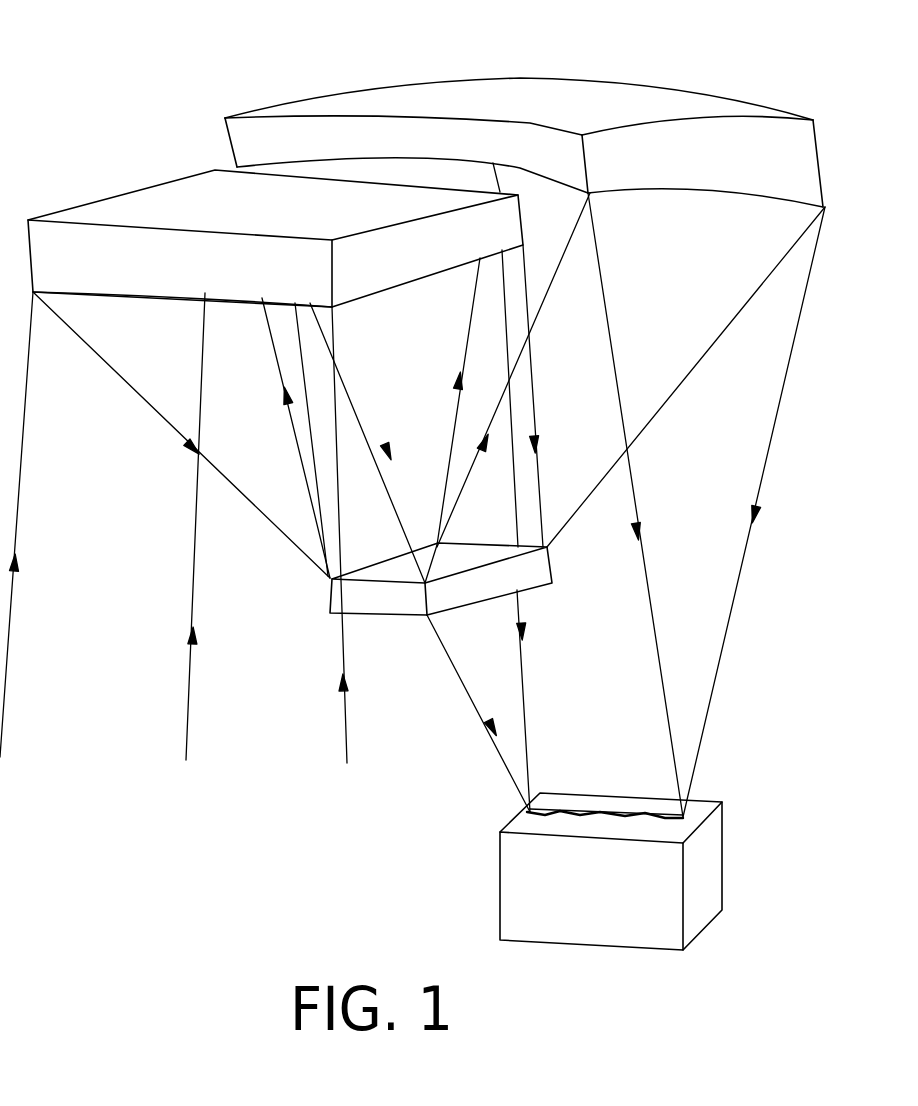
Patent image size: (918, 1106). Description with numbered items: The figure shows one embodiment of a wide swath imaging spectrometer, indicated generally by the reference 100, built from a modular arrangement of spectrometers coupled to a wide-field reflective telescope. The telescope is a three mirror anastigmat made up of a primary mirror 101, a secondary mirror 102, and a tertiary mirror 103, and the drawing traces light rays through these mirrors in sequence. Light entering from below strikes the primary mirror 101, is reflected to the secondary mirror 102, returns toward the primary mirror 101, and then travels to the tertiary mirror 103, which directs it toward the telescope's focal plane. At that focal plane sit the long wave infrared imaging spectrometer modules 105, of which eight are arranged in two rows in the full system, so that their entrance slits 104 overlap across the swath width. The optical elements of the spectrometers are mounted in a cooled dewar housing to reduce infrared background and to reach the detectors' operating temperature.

The optical system 100 is at (236, 56).
The primary mirror 101 is at (137, 210).
The secondary mirror 102 is at (407, 615).
The tertiary mirror 103 is at (673, 98).
The entrance slits 104 is at (580, 812).
The long wave infrared imaging spectrometer modules 105 is at (627, 900).